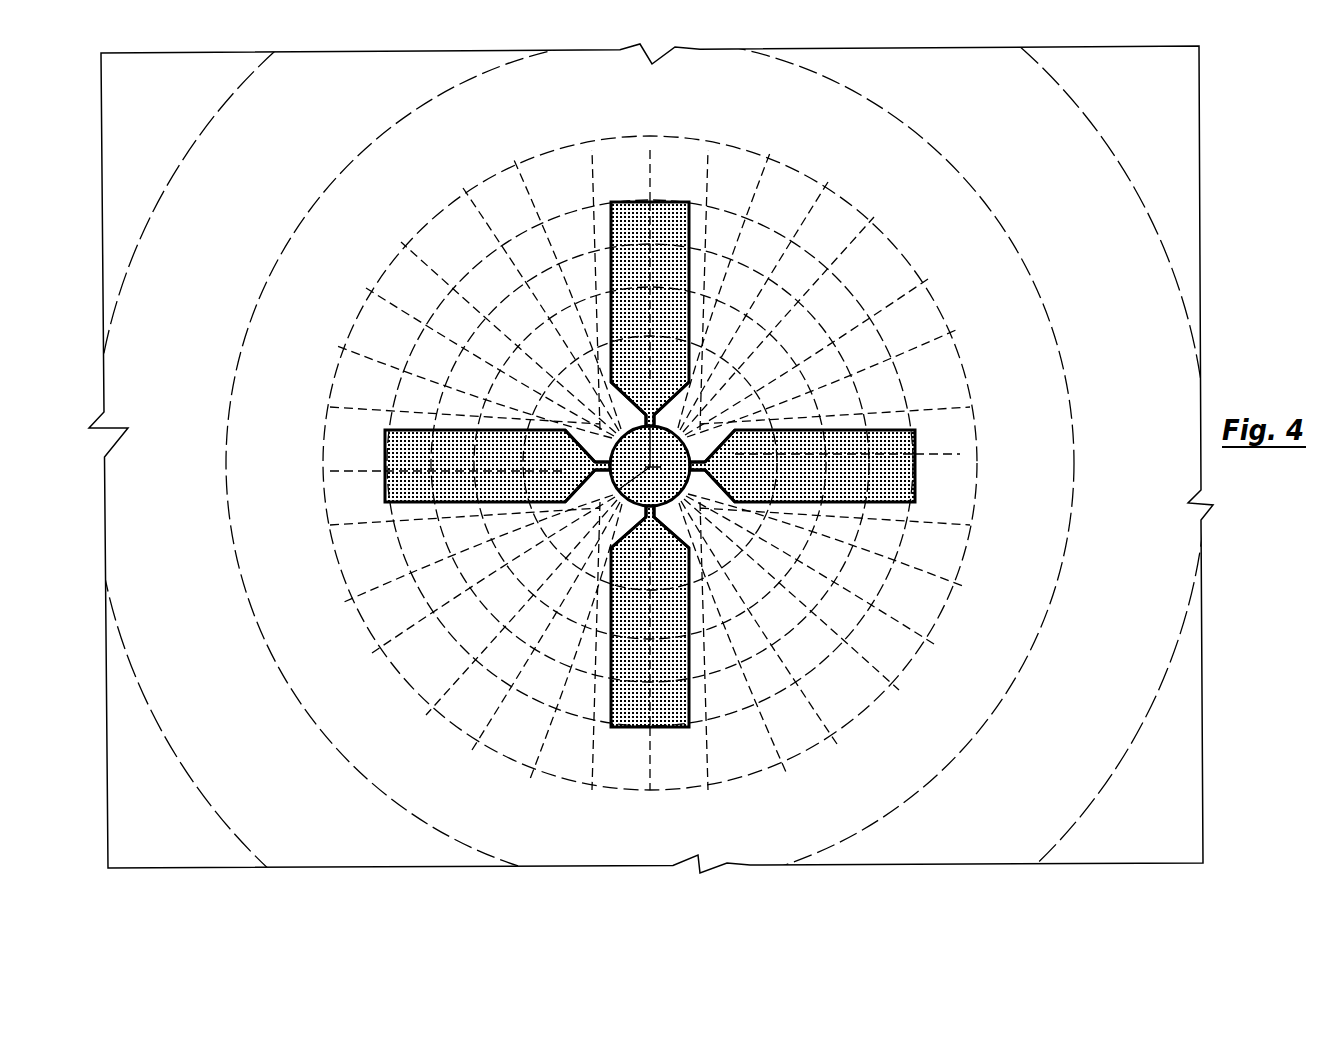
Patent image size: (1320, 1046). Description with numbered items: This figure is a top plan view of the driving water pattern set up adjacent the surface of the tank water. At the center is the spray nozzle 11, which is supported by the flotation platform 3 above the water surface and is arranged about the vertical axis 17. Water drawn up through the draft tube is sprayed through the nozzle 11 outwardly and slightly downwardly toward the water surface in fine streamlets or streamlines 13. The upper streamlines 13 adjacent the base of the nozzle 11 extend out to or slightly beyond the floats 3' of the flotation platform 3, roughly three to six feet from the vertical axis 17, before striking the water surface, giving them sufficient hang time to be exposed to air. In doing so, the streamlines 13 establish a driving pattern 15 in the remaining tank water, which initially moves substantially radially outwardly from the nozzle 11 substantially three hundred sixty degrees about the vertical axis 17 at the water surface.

The flotation platform 3 is at (650, 437).
The floats 3' is at (646, 464).
The spray nozzle 11 is at (686, 438).
The streamlines 13 is at (452, 300).
The driving pattern 15 is at (203, 128).
The vertical axis 17 is at (637, 483).